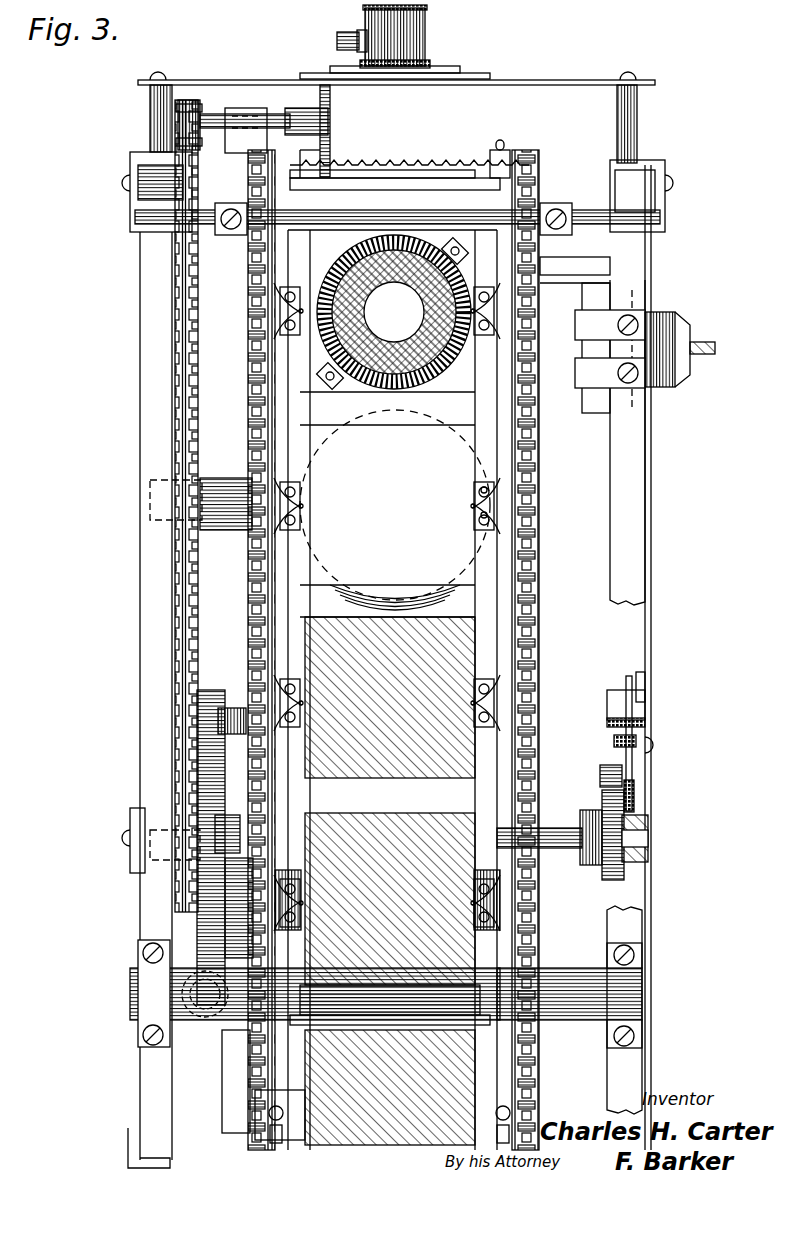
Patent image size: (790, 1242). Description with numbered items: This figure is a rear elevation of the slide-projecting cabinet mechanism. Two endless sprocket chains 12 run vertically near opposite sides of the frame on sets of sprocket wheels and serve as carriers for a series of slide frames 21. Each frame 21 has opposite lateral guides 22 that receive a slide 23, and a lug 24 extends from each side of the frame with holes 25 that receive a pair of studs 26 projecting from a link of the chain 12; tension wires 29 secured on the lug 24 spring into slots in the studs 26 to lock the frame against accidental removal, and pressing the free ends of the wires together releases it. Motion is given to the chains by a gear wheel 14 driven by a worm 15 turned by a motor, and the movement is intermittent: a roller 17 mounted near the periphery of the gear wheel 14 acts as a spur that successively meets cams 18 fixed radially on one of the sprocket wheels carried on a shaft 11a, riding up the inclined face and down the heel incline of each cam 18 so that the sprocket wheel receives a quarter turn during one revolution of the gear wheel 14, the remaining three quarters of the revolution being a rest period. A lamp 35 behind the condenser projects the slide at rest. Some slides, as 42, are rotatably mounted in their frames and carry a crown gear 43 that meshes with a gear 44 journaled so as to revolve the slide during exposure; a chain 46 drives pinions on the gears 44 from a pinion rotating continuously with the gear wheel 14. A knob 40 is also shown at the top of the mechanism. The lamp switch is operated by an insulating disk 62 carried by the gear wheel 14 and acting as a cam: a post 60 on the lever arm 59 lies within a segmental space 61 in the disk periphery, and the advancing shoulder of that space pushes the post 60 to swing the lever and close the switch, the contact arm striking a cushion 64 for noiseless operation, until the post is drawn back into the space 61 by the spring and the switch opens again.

The adjusting knob 40 is at (428, 30).
The crown gear 43 is at (232, 103).
The gear 44 is at (330, 122).
The chain 46 is at (185, 283).
The endless sprocket chain 12 is at (248, 420).
The slide 42 is at (415, 358).
The holes 25 is at (275, 522).
The tension wires 29 is at (483, 515).
The lamp 35 is at (360, 592).
The frame 21 is at (401, 600).
The lug 24 is at (270, 682).
The slide 23 is at (390, 881).
The lateral guides 22 is at (297, 775).
The shaft 11a is at (405, 975).
The worm 15 is at (138, 985).
The gear wheel 14 is at (212, 800).
The roller 17 is at (228, 730).
The cams 18 is at (185, 890).
The studs 26 is at (290, 1140).
The cushion 64 is at (612, 722).
The arm 59 is at (632, 765).
The stud or post 60 is at (600, 772).
The segmental space 61 is at (603, 808).
The disk or wheel 62 is at (606, 872).